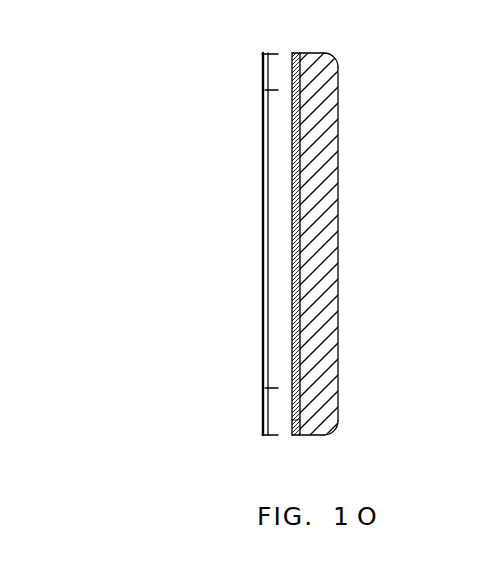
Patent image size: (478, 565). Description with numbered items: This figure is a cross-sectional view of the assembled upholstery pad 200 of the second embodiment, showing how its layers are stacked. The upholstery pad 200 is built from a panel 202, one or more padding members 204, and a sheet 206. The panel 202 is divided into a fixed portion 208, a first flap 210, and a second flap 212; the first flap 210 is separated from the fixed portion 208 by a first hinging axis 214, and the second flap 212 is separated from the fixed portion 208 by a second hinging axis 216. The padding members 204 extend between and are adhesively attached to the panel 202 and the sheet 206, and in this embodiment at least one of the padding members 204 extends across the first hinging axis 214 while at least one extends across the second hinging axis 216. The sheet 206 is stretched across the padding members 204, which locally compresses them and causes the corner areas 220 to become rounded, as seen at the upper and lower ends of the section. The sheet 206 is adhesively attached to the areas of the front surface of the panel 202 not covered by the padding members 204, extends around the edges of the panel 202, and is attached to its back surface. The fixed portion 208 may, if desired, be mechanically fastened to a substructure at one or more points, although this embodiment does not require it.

The upholstery pad 200 is at (136, 101).
The panel 202 is at (298, 250).
The padding members 204 is at (325, 295).
The sheet 206 is at (338, 225).
The fixed portion 208 is at (263, 197).
The first flap 210 is at (263, 412).
The second flap 212 is at (263, 66).
The first hinging axis 214 is at (300, 402).
The second hinging axis 216 is at (298, 92).
The corner areas 220 is at (330, 57).